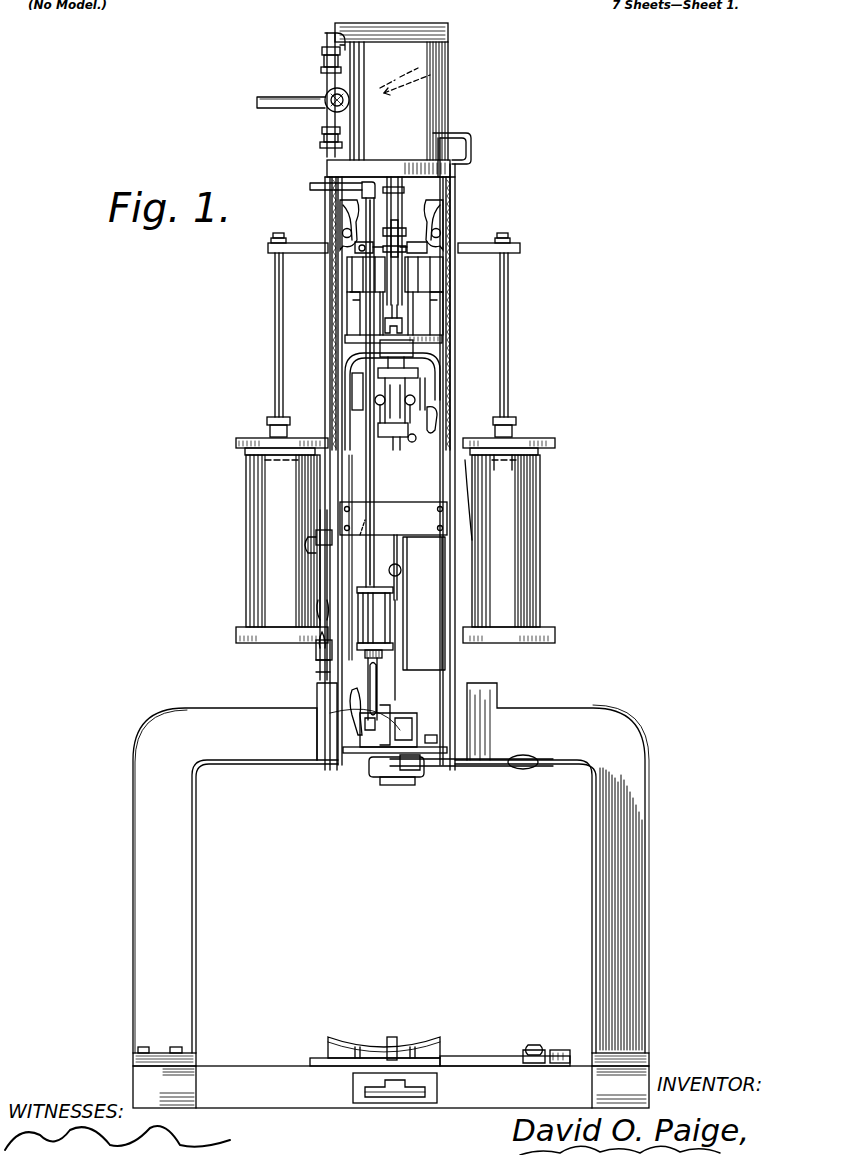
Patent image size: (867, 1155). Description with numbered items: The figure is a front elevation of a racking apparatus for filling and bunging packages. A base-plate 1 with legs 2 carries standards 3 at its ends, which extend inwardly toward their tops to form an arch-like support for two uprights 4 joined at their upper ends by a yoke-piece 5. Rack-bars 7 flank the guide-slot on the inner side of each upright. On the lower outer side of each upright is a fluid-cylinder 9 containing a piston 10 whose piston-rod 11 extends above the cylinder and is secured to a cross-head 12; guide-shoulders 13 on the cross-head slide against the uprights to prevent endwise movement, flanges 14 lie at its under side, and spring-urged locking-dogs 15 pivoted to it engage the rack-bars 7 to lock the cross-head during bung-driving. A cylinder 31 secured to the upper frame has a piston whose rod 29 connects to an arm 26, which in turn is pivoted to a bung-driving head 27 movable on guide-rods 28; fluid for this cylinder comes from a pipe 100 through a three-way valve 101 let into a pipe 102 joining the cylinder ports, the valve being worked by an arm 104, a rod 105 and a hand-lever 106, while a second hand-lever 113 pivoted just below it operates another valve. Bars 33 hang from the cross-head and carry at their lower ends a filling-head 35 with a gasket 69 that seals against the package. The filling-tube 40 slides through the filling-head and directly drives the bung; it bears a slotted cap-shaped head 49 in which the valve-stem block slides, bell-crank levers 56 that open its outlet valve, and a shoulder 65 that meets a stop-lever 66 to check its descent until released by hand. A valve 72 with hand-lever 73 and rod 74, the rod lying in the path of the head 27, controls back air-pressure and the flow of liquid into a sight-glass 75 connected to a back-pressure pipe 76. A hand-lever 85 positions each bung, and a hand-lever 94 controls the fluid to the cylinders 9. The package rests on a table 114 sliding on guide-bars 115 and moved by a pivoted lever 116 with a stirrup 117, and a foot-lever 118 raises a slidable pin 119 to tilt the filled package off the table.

The base-plate 1 is at (391, 1087).
The extensions or legs 2 is at (688, 1038).
The standards 3 is at (192, 925).
The uprights 4 is at (338, 360).
The yoke-piece 5 is at (472, 146).
The rack-bars 7 is at (347, 270).
The fluid-cylinder 9 is at (248, 572).
The piston 10 is at (252, 467).
The piston-rod 11 is at (274, 318).
The cross-head 12 is at (475, 247).
The guide-shoulders 13 is at (325, 248).
The flanges 14 is at (430, 232).
The locking-dogs 15 is at (340, 212).
The arm 26 is at (405, 300).
The head 27 is at (420, 380).
The guide-rods 28 is at (352, 394).
The rod 29 is at (388, 178).
The cylinder 31 is at (447, 55).
The bars 33 is at (443, 262).
The filling-head 35 is at (375, 760).
The filling-tube 40 is at (400, 710).
The cap-shaped head 49 is at (420, 407).
The bell-crank levers 56 is at (445, 450).
The shoulder or lug 65 is at (357, 443).
The stop-lever 66 is at (393, 518).
The gasket 69 is at (395, 785).
The valve 72 is at (385, 705).
The hand-lever 73 is at (352, 712).
The rod 74 is at (320, 670).
The sight-glass 75 is at (393, 615).
The pipe 76 is at (312, 185).
The hand-lever 85 is at (515, 770).
The hand-lever 94 is at (317, 658).
The pipe 100 is at (275, 117).
The three-way valve 101 is at (332, 93).
The pipe 102 is at (320, 56).
The arm 104 is at (400, 71).
The rod 105 is at (437, 160).
The hand-lever 106 is at (460, 440).
The hand-lever 113 is at (460, 485).
The table 114 is at (362, 1042).
The guide-bars 115 is at (420, 1058).
The pivoted lever 116 is at (540, 1050).
The stirrup 117 is at (562, 1053).
The foot-lever 118 is at (385, 1095).
The slidable pin 119 is at (405, 1030).